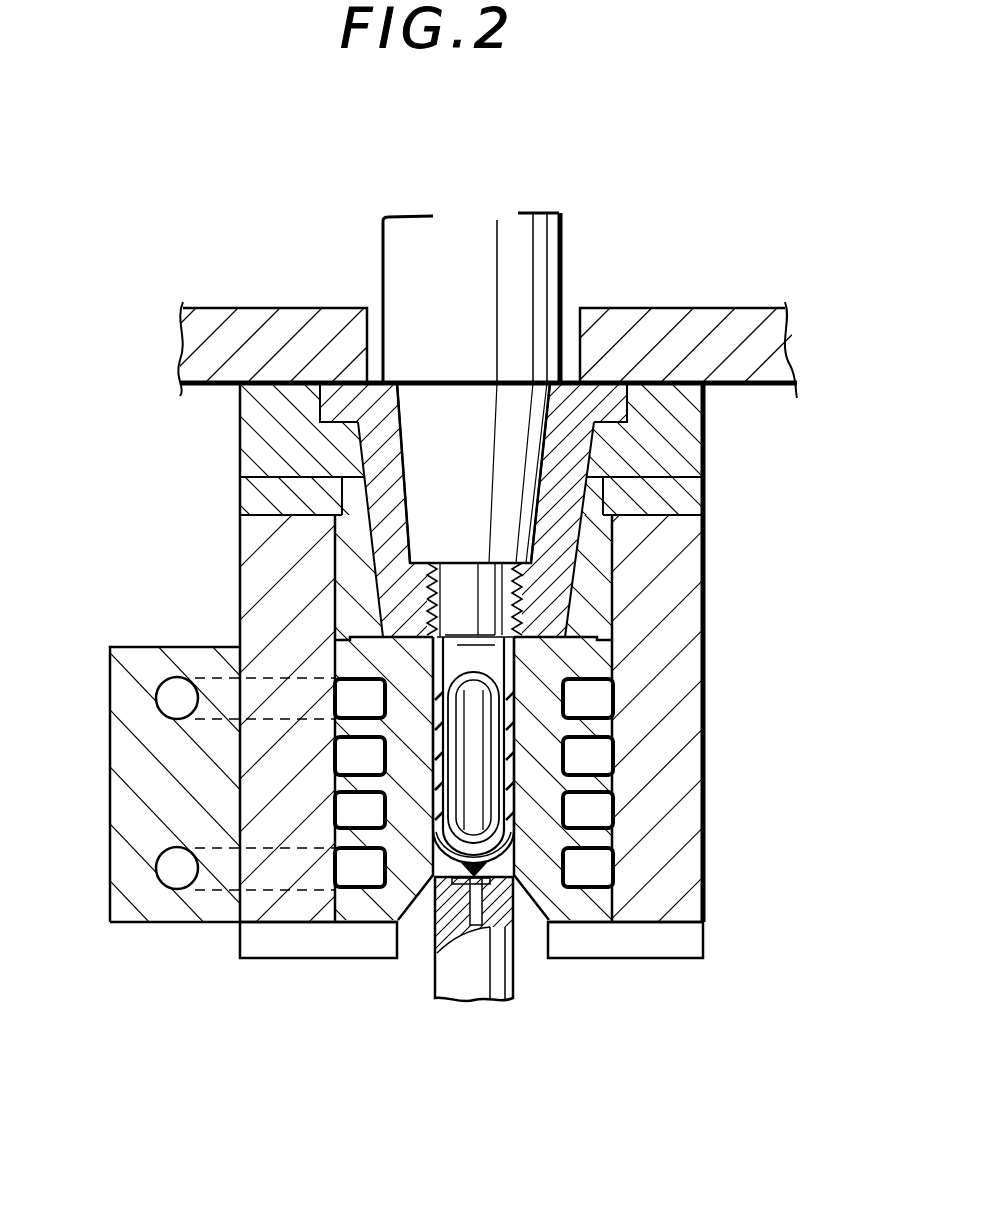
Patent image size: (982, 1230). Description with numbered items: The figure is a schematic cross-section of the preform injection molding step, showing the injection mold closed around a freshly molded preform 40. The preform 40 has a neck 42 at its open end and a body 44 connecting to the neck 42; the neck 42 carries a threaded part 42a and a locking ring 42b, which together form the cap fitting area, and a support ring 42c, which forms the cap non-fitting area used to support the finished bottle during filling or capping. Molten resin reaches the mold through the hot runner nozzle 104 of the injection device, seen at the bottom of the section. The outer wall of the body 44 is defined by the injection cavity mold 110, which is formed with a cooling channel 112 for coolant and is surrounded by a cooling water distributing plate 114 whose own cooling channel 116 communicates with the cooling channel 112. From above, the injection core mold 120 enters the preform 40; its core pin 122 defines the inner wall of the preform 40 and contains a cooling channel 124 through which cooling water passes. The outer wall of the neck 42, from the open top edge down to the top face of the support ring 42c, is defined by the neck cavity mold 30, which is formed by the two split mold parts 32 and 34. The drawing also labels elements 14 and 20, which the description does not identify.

The mounting plate 14 is at (767, 342).
The mold assembly 20 is at (686, 453).
The neck cavity mold 30 is at (590, 440).
The split mold part 32 is at (603, 492).
The split mold part 34 is at (377, 522).
The preform 40 is at (705, 762).
The neck 42 is at (468, 708).
The threaded part 42a is at (418, 588).
The locking ring 42b is at (418, 608).
The support ring 42c is at (505, 640).
The body 44 is at (510, 840).
The hot runner nozzle 104 is at (502, 962).
The injection cavity mold 110 is at (597, 663).
The cooling channel 112 is at (363, 877).
The cooling water distributing plate 114 is at (130, 760).
The cooling channel 116 is at (176, 690).
The injection core mold 120 is at (545, 276).
The core pin 122 is at (512, 742).
The cooling channel 124 is at (538, 626).